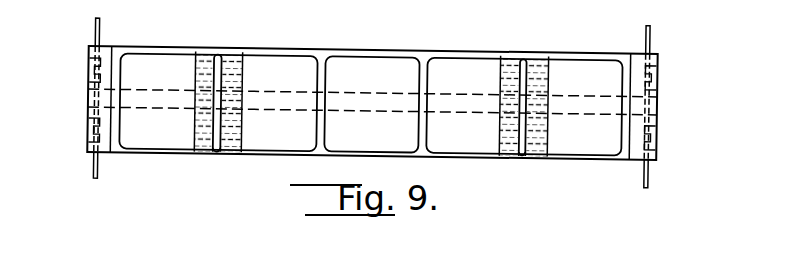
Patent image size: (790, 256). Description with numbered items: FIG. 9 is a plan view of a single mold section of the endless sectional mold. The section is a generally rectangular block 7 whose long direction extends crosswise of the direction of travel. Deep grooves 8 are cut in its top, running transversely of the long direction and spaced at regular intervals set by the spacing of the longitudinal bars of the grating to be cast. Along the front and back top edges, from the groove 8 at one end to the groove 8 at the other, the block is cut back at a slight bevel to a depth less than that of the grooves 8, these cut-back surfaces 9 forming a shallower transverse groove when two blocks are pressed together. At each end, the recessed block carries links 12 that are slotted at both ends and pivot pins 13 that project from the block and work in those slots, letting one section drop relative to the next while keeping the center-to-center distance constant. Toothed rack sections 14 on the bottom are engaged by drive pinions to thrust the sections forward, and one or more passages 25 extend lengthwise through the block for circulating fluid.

The rectangular block 7 is at (271, 128).
The grooves 8 is at (214, 140).
The cut-back surfaces 9 is at (263, 46).
The links 12 is at (99, 34).
The pivot pins 13 is at (658, 73).
The toothed rack section 14 is at (505, 139).
The passages 25 is at (642, 108).